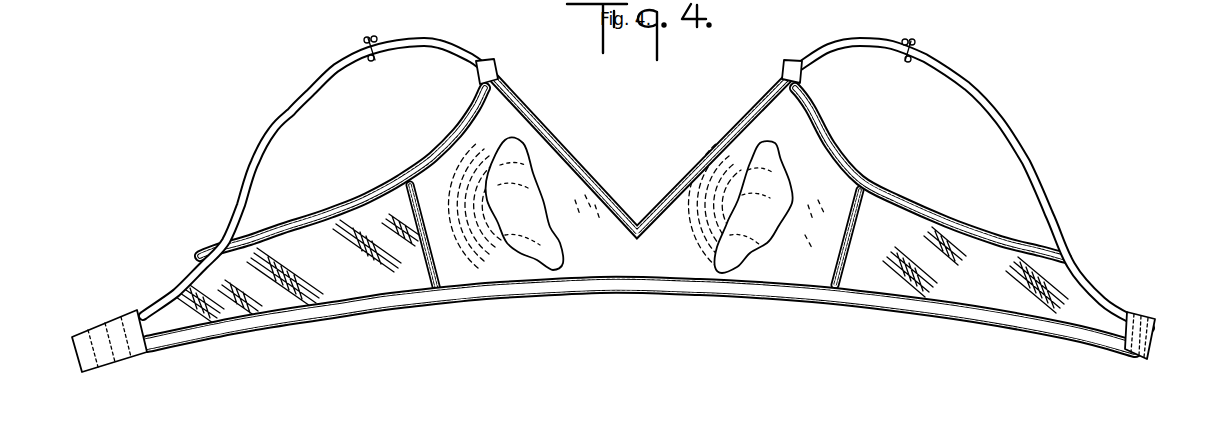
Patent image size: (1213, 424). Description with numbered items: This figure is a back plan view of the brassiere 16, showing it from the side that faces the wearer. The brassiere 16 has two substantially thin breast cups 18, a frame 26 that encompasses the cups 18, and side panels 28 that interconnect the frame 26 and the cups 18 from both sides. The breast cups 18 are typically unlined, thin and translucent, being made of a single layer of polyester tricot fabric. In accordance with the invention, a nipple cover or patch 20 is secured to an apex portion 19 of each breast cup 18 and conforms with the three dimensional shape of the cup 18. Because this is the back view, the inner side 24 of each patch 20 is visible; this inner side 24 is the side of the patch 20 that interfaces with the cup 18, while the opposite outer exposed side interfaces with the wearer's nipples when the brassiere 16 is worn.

The brassiere 16 is at (620, 172).
The breast cups 18 is at (685, 262).
The apex portion 19 is at (491, 243).
The nipple cover or patch 20 is at (517, 185).
The inner side 24 is at (527, 219).
The frame 26 is at (540, 120).
The side panels 28 is at (345, 238).